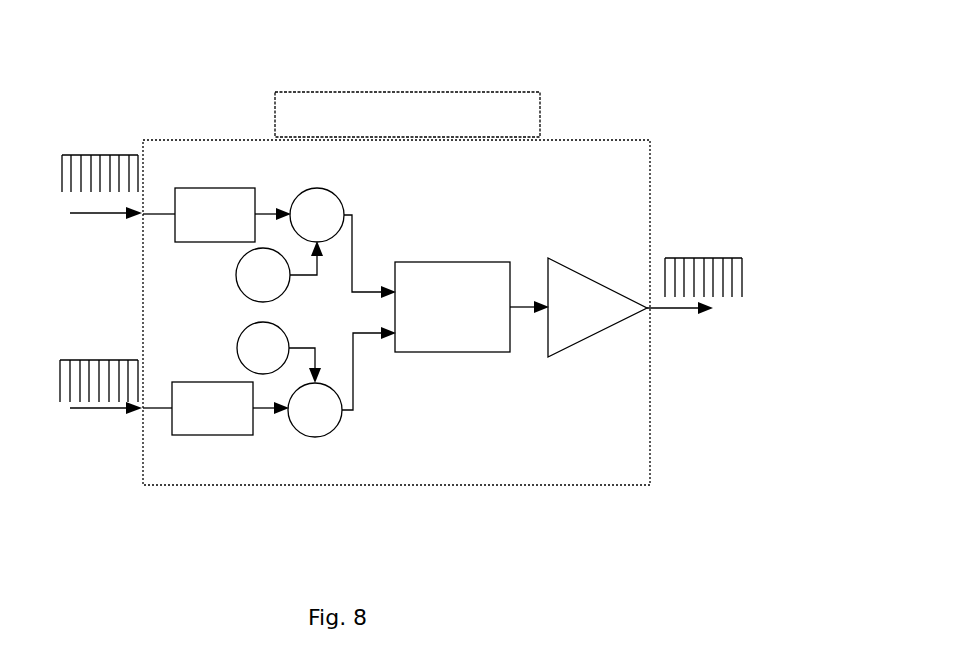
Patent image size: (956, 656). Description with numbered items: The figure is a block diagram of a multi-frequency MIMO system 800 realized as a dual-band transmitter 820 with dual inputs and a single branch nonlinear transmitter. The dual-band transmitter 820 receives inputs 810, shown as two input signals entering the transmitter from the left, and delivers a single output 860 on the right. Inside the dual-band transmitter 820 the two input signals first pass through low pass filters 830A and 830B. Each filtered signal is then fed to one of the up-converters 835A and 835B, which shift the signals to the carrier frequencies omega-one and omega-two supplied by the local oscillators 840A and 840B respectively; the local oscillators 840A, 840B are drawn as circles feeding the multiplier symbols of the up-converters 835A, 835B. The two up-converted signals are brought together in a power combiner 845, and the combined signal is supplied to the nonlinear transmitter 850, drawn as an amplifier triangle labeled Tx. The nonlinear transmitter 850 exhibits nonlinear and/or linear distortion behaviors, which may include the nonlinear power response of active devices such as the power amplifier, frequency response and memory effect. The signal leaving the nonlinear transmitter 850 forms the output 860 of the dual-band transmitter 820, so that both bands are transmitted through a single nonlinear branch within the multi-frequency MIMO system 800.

The multi-frequency MIMO system 800 is at (327, 60).
The inputs 810 is at (92, 428).
The dual-band transmitter 820 is at (390, 485).
The low pass filter 830A is at (183, 188).
The low pass filter 830B is at (219, 436).
The up-converter 835A is at (312, 188).
The up-converter 835B is at (332, 437).
The local oscillator 840A is at (236, 284).
The local oscillator 840B is at (236, 336).
The power combiner 845 is at (428, 355).
The nonlinear transmitter 850 is at (575, 263).
The output 860 is at (688, 258).